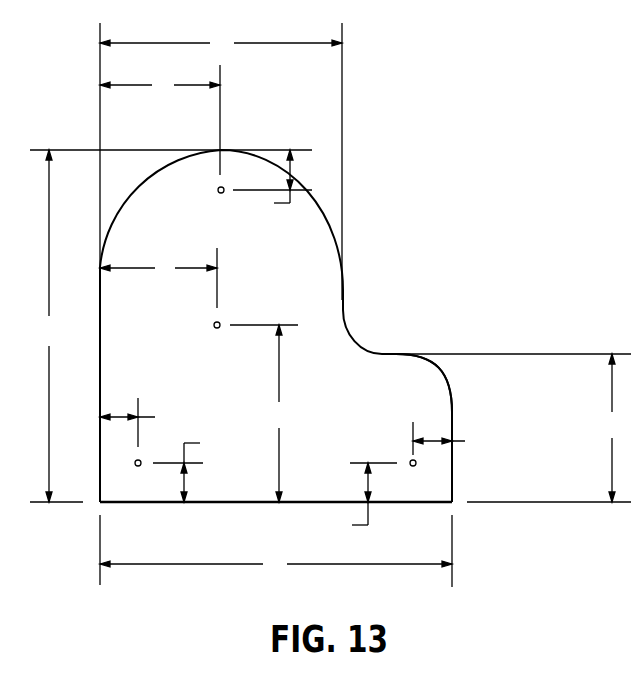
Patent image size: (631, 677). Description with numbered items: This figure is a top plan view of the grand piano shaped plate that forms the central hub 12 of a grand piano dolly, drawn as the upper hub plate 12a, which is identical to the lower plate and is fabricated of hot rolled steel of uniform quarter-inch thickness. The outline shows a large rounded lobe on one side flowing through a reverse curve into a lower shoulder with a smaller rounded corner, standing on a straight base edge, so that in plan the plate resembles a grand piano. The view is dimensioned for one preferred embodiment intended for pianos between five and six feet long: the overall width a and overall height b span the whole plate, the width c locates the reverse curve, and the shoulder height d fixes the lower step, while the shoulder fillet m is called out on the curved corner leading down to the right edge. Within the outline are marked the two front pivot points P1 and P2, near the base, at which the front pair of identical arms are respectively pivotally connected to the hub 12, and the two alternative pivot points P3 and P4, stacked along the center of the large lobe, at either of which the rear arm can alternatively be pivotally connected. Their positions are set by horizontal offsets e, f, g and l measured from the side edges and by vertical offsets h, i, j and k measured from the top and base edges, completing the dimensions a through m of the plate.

The central hub 12 is at (353, 328).
The upper hub plate 12a is at (227, 503).
The dimension a is at (276, 563).
The dimension b is at (49, 326).
The dimension c is at (221, 43).
The dimension d is at (613, 428).
The dimension e is at (160, 84).
The dimension f is at (158, 267).
The dimension g is at (136, 419).
The dimension h is at (199, 467).
The dimension i is at (279, 413).
The dimension j is at (275, 188).
The dimension k is at (354, 502).
The dimension l is at (445, 442).
The dimension m is at (440, 380).
The front pivot point P1 is at (137, 477).
The front pivot point P2 is at (412, 477).
The alternative rear pivot point P3 is at (220, 203).
The alternative rear pivot point P4 is at (216, 338).